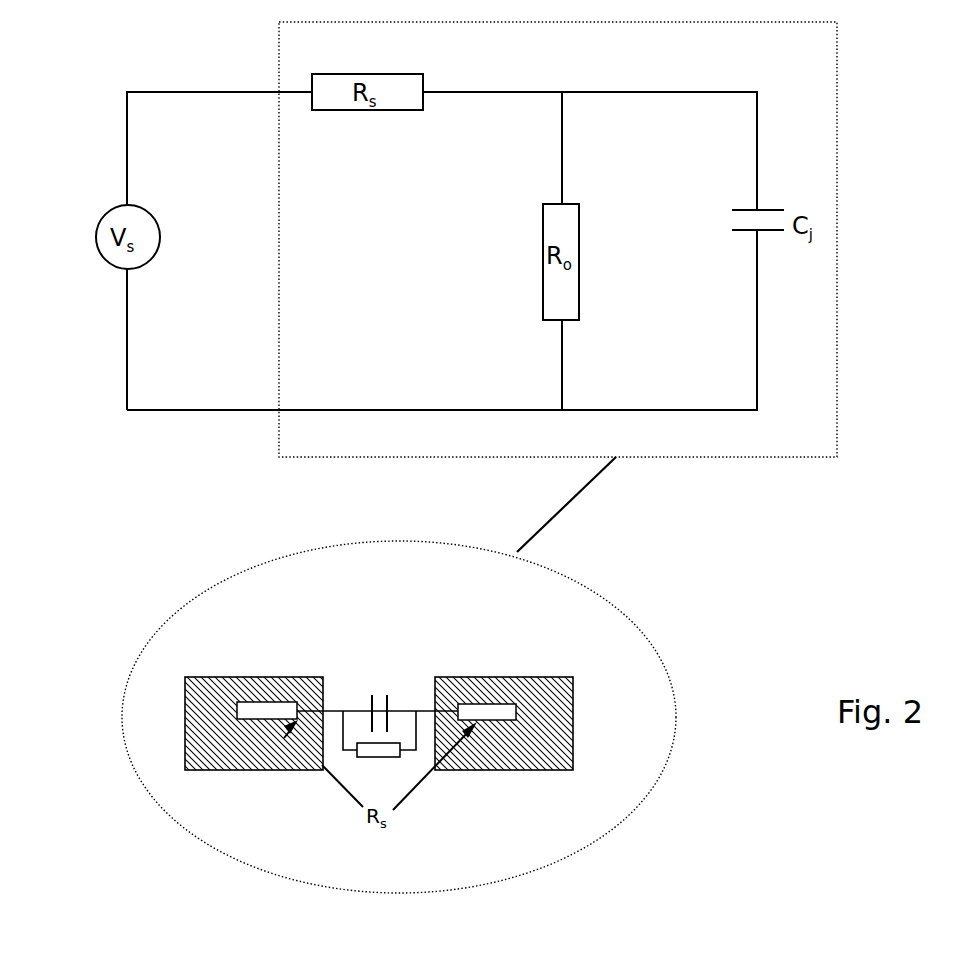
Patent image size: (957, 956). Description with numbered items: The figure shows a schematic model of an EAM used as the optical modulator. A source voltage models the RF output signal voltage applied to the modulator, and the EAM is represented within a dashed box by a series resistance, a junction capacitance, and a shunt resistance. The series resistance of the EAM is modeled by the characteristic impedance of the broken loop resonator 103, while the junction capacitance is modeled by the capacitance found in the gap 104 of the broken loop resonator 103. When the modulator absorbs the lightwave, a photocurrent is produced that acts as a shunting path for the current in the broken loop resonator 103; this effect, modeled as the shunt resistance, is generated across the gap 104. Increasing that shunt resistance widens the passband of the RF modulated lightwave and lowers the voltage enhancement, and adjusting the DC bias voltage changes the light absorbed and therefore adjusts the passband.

The broken loop resonator 103 is at (245, 770).
The gap 104 is at (403, 693).
The element EAM is at (838, 317).